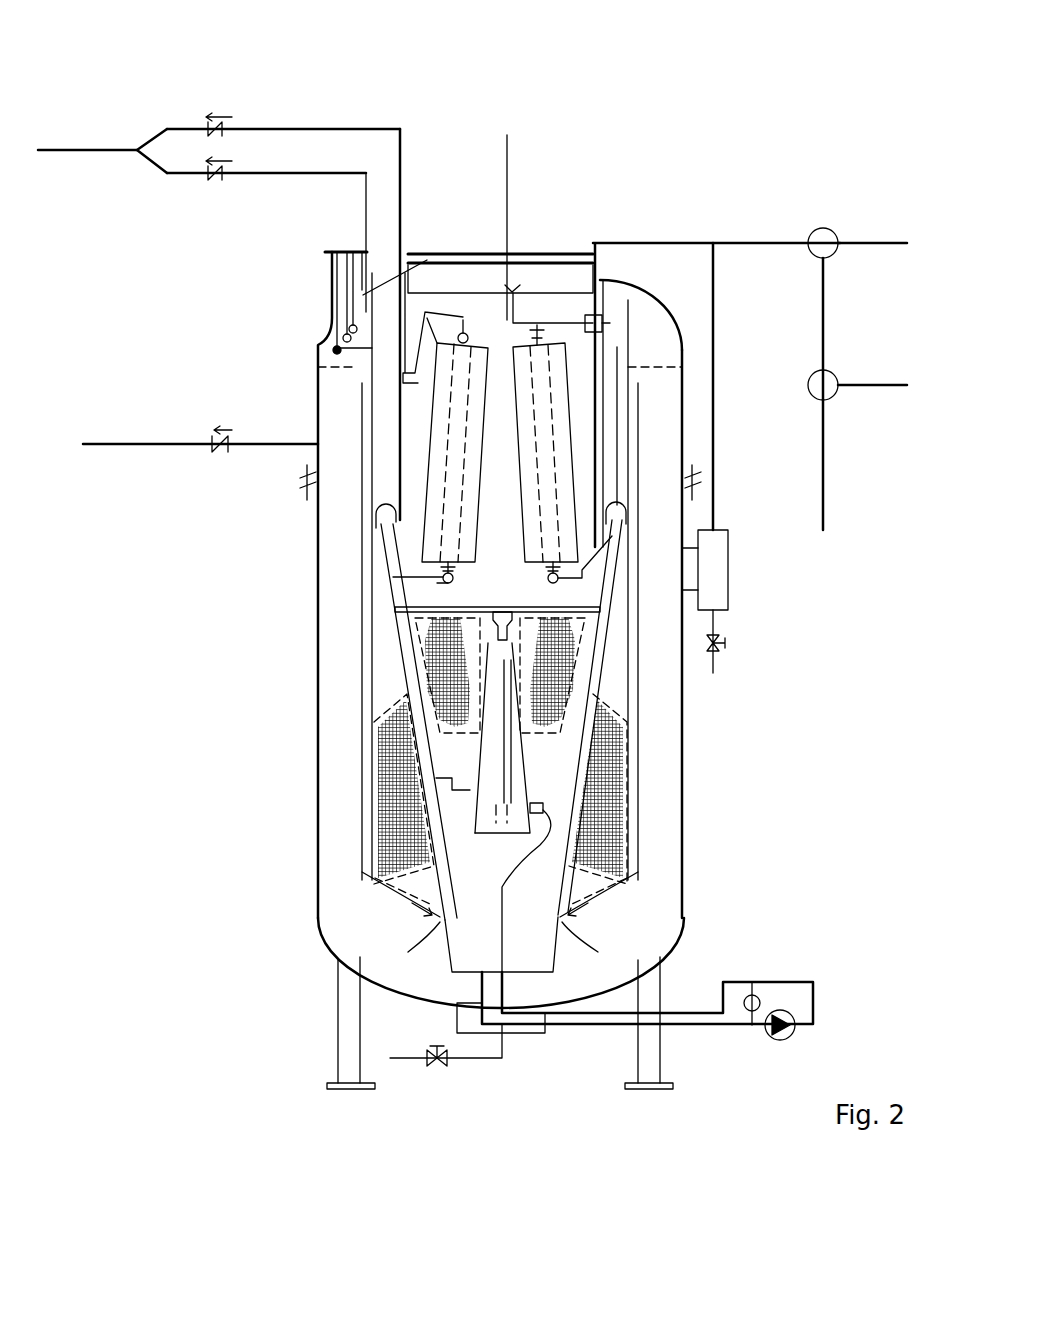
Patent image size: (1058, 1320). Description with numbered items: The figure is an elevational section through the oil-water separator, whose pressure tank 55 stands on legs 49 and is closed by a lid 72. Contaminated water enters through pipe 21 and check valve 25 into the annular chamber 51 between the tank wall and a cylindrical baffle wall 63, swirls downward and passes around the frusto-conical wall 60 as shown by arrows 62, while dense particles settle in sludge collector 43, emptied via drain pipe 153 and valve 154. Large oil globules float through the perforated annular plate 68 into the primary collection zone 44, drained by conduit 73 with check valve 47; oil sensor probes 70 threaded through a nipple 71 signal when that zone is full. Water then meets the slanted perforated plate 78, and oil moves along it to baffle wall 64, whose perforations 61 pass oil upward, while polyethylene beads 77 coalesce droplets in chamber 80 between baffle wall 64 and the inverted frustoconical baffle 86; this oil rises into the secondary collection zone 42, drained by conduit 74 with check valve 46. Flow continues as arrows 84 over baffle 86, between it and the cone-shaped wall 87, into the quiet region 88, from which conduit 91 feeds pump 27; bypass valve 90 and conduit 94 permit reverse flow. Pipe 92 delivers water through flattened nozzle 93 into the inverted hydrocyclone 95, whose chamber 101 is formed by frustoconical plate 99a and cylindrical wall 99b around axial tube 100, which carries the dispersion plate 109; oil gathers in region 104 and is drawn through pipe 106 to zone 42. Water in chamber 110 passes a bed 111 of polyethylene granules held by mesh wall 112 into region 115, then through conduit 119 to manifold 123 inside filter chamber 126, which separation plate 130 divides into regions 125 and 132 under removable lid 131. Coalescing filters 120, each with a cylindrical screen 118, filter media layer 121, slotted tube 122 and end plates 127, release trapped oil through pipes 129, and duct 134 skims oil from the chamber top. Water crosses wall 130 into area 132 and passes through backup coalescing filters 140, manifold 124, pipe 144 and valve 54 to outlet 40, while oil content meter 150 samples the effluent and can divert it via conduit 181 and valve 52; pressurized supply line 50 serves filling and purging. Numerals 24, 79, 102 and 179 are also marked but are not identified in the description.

The pipe 21 is at (210, 448).
The gas inlet pipe 24 is at (102, 148).
The check valve 25 is at (233, 450).
The feed pump 27 is at (780, 1043).
The outlet port 40 is at (843, 237).
The secondary collection zone 42 is at (385, 310).
The sludge collector 43 is at (365, 1078).
The primary collection zone 44 is at (325, 347).
The check valve 46 is at (212, 120).
The check valve 47 is at (213, 173).
The legs 49 is at (333, 1040).
The pressurized water supply line 50 is at (843, 383).
The annular chamber 51 is at (340, 477).
The valve 52 is at (825, 486).
The fluid recirculation valve 54 is at (812, 230).
The pressure tank 55 is at (640, 330).
The frusto-conical wall 60 is at (412, 892).
The perforations 61 is at (390, 880).
The arrows 62 is at (503, 942).
The cylindrical baffle wall 63 is at (395, 742).
The cylindrical baffle wall 64 is at (362, 622).
The annular plate 68 is at (345, 368).
The oil sensor probes 70 is at (337, 306).
The nipple 71 is at (330, 282).
The lid 72 is at (335, 245).
The conduit 73 is at (142, 150).
The conduit 74 is at (267, 128).
The polyethylene beads 77 is at (580, 835).
The slanted perforated plate 78 is at (330, 925).
The filter medium 79 is at (625, 720).
The chamber 80 is at (620, 712).
The arrows 84 is at (500, 500).
The inverted frustoconical baffle 86 is at (425, 782).
The cone-shaped wall 87 is at (590, 735).
The region 88 is at (501, 935).
The bypass valve 90 is at (667, 1070).
The conduit 91 is at (750, 1030).
The pipe 92 is at (810, 982).
The flattened nozzle 93 is at (625, 876).
The conduit 94 is at (633, 1027).
The inverted hydrocyclone 95 is at (512, 802).
The frustoconical plate 99a is at (556, 832).
The cylindrical wall 99b is at (543, 808).
The axial tube 100 is at (528, 772).
The chamber 101 is at (395, 835).
The deflector 102 is at (375, 826).
The region 104 is at (645, 600).
The pipe 106 is at (617, 400).
The dispersion plate 109 is at (400, 613).
The chamber 110 is at (528, 650).
The second bed 111 is at (392, 703).
The mesh wall 112 is at (430, 670).
The region 115 is at (403, 757).
The cylindrical screen 118 is at (400, 365).
The conduit 119 is at (403, 687).
The coalescing filters 120 is at (472, 365).
The layer of filter media 121 is at (370, 307).
The slotted tube 122 is at (605, 350).
The manifold 123 is at (443, 583).
The manifold 124 is at (645, 530).
The region 125 is at (214, 431).
The filter chamber 126 is at (337, 350).
The circular plates 127 is at (463, 333).
The pipes 129 is at (440, 317).
The separation plate 130 is at (517, 320).
The removable lid 131 is at (520, 213).
The region 132 is at (602, 324).
The duct 134 is at (512, 292).
The coalescing filters 140 is at (682, 367).
The pipe 144 is at (688, 243).
The oil content meter 150 is at (728, 562).
The drain pipe 153 is at (460, 1060).
The valve 154 is at (433, 1064).
The valve 179 is at (720, 640).
The conduit 181 is at (827, 370).